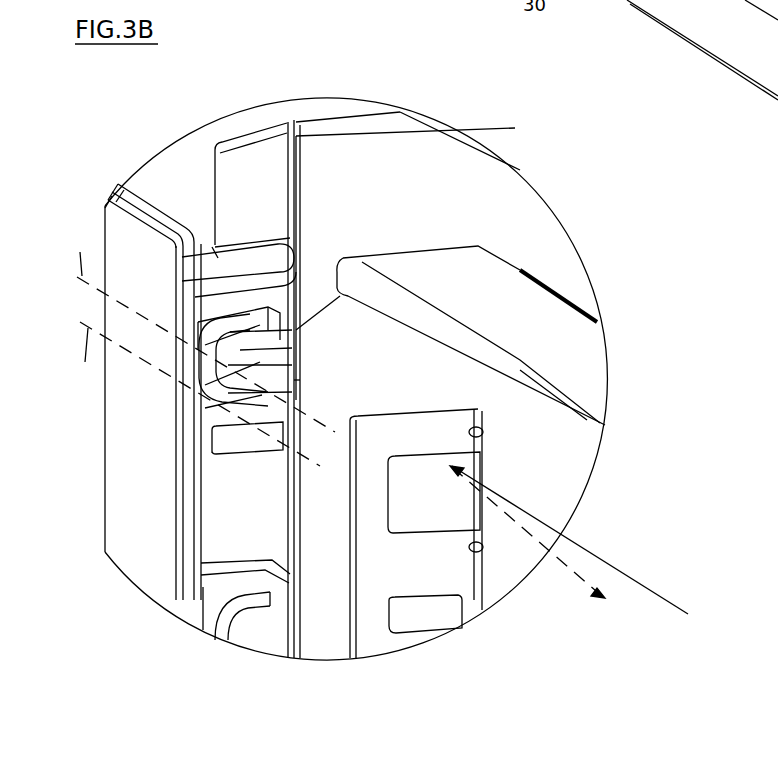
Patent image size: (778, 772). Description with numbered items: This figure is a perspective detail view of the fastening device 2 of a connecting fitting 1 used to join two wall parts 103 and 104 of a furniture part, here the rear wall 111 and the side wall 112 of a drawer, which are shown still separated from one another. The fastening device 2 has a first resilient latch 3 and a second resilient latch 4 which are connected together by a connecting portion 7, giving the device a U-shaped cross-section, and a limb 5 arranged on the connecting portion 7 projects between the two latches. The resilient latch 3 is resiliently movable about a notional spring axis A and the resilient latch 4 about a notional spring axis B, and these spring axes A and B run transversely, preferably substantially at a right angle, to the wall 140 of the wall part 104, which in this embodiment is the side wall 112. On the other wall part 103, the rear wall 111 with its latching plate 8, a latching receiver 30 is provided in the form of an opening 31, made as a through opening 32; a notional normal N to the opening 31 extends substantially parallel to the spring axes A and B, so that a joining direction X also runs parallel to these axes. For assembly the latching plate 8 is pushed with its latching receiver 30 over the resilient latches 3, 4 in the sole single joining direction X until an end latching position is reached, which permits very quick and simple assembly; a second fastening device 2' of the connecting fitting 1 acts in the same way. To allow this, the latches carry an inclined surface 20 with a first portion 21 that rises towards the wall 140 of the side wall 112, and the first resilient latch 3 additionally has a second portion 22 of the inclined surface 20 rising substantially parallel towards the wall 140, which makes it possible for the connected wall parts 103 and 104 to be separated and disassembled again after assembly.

The connecting fitting 1 is at (258, 521).
The fastening device 2 is at (491, 390).
The fastening device 2' is at (225, 633).
The first resilient latch 3 is at (265, 352).
The second resilient latch 4 is at (265, 408).
The limb 5 is at (285, 381).
The connecting portion 7 is at (265, 380).
The latching plate 8 is at (403, 581).
The inclined surface 20 is at (190, 272).
The first portion of the inclined surface 21 is at (296, 330).
The second portion of the inclined surface 22 is at (215, 243).
The latching receiver 30 is at (427, 518).
The opening 31 is at (476, 432).
The through opening 32 is at (476, 547).
The wall part 103 is at (567, 350).
The wall part 104 is at (382, 148).
The rear wall 111 is at (498, 298).
The side wall 112 is at (452, 157).
The wall 140 is at (350, 181).
The spring axis A is at (202, 327).
The spring axis B is at (197, 394).
The normal N is at (535, 544).
The joining direction X is at (579, 551).